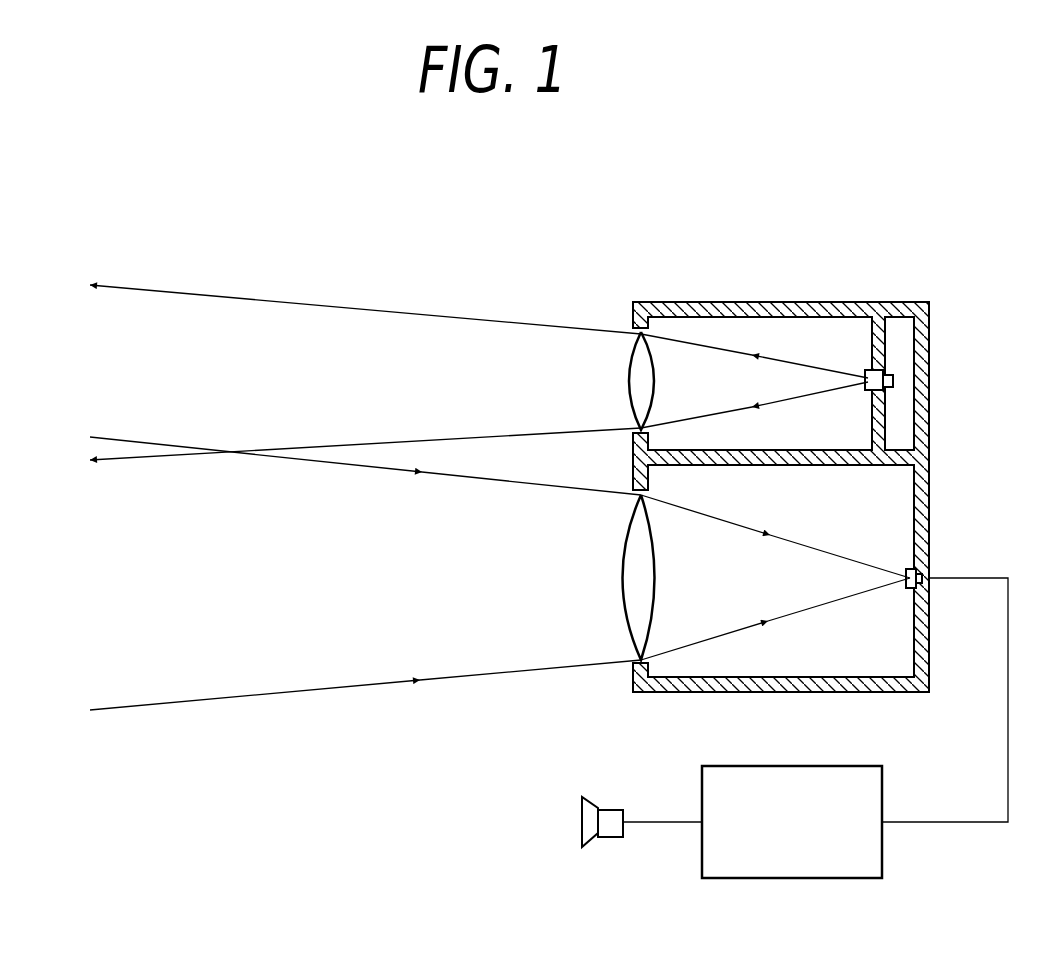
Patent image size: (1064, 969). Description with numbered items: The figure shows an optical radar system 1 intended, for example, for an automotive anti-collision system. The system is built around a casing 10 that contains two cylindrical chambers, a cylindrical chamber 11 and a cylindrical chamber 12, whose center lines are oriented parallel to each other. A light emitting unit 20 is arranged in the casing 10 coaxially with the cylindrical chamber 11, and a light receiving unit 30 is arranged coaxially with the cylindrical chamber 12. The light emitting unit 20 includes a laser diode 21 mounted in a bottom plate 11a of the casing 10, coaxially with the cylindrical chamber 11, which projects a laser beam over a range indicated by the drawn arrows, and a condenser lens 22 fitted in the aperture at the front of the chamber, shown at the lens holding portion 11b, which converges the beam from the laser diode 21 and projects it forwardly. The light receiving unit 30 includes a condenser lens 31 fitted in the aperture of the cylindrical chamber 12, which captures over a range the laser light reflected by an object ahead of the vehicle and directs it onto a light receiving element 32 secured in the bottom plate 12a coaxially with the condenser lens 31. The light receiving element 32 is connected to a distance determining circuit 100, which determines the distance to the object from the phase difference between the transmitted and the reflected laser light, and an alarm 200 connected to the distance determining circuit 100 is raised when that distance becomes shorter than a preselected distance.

The optical radar system 1 is at (803, 226).
The casing 10 is at (848, 301).
The cylindrical chamber 11 is at (723, 321).
The bottom plate 11a is at (890, 358).
The lens holding portion 11b is at (634, 328).
The cylindrical chamber 12 is at (800, 679).
The bottom plate 12a is at (911, 623).
The light emitting unit 20 is at (898, 336).
The laser diode 21 is at (886, 387).
The condenser lens 22 is at (638, 375).
The light receiving unit 30 is at (727, 654).
The condenser lens 31 is at (626, 549).
The light receiving element 32 is at (917, 572).
The distance determining circuit 100 is at (848, 766).
The alarm 200 is at (610, 808).